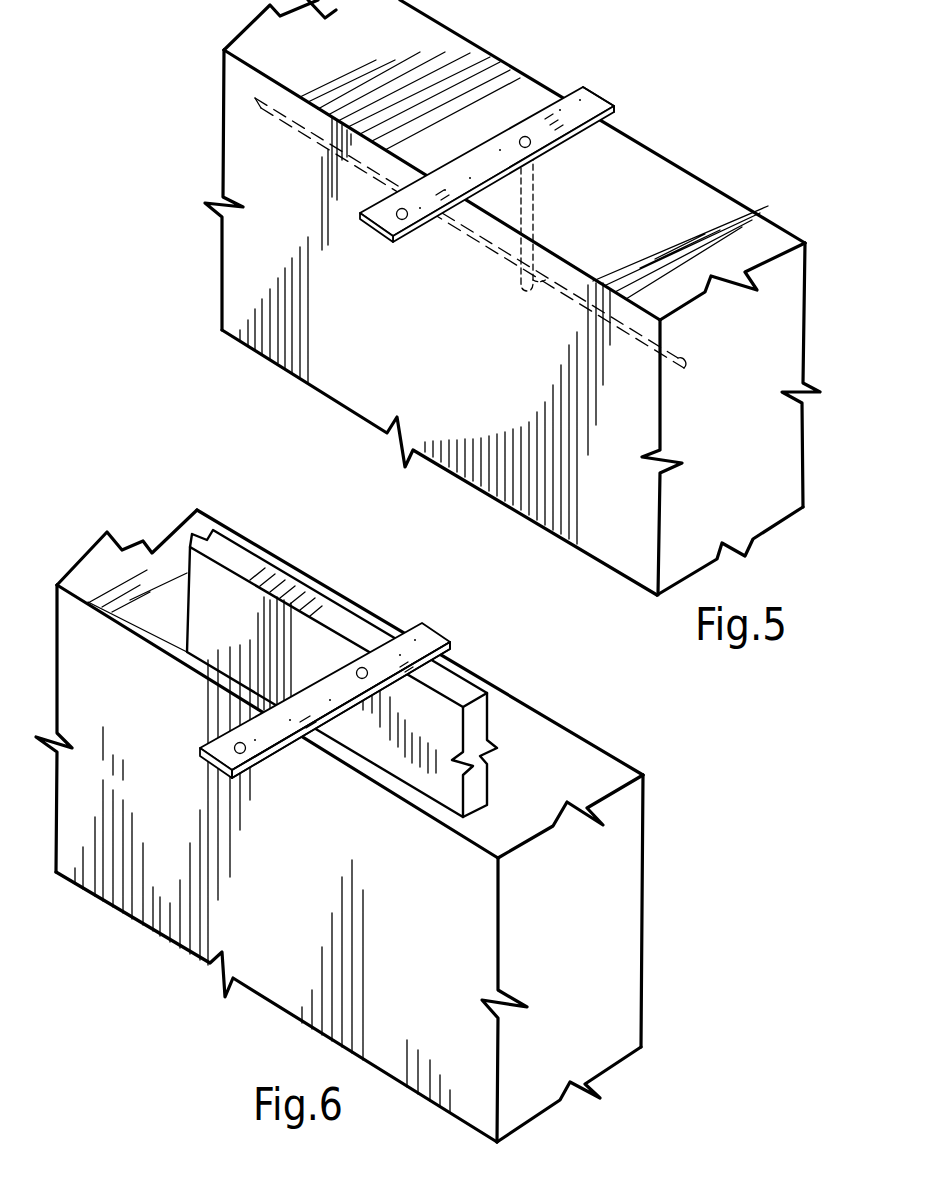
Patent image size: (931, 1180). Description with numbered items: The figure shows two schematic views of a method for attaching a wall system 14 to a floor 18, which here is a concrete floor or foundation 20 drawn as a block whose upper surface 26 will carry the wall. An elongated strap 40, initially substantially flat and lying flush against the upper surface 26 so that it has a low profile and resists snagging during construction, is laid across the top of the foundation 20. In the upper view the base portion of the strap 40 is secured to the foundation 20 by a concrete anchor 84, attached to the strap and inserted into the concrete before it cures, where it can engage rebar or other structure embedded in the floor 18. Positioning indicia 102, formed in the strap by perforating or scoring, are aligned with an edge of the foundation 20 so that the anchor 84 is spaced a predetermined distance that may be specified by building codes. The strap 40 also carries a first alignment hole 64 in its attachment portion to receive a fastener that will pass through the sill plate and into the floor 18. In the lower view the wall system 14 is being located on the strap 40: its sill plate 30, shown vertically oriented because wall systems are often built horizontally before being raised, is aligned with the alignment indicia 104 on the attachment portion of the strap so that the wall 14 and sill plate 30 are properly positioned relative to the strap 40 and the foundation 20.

In FIG. 6, the wall system 14 is at (247, 563).
In FIG. 5, the floor 18 is at (390, 381).
In FIG. 6, the floor 18 is at (268, 962).
In FIG. 5, the concrete floor or foundation 20 is at (773, 453).
In FIG. 6, the concrete floor or foundation 20 is at (607, 968).
In FIG. 5, the upper surface 26 is at (758, 239).
In FIG. 6, the upper surface 26 is at (607, 777).
In FIG. 6, the sill plate 30 is at (316, 588).
In FIG. 5, the strap 40 is at (586, 144).
In FIG. 6, the strap 40 is at (410, 613).
In FIG. 5, the first alignment hole 64 is at (394, 216).
In FIG. 5, the concrete anchor 84 is at (548, 197).
In FIG. 5, the positioning indicia 102 is at (597, 95).
In FIG. 6, the alignment indicia 104 is at (307, 750).